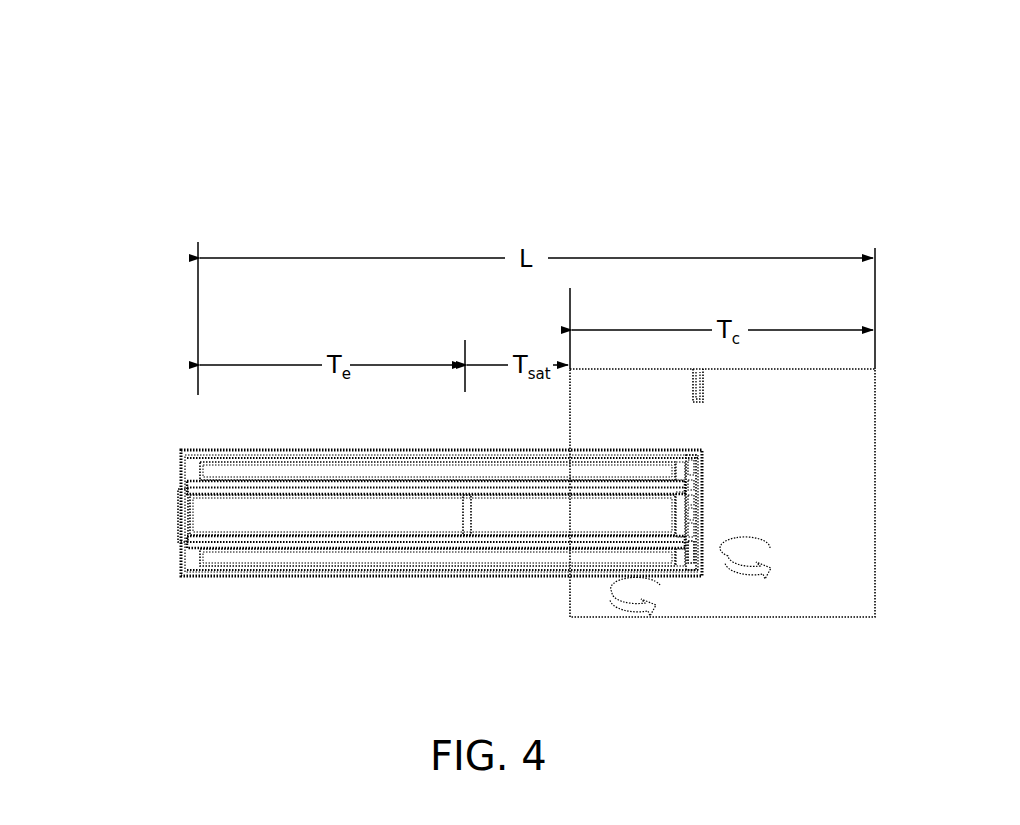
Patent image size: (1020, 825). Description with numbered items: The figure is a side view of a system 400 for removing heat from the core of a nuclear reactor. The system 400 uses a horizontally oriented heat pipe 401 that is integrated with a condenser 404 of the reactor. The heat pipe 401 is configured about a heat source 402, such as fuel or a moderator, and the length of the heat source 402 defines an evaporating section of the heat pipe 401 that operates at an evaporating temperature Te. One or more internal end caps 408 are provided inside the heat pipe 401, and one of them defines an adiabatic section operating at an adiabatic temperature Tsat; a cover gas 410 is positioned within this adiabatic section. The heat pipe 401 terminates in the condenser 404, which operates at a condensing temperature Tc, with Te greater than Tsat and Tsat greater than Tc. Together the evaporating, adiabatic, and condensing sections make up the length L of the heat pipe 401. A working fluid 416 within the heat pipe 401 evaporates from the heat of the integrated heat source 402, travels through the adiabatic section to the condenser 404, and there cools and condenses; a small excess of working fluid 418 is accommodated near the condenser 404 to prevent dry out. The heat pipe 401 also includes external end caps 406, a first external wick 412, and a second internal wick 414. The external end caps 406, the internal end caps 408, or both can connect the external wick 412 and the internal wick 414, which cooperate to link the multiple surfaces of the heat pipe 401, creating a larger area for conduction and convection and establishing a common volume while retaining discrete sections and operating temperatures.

The system 400 is at (583, 116).
The heat pipe 401 is at (185, 597).
The heat source 402 is at (322, 518).
The condenser 404 is at (819, 584).
The external end caps 406 is at (178, 470).
The internal end caps 408 is at (196, 514).
The cover gas 410 is at (566, 507).
The external wick 412 is at (342, 457).
The internal wick 414 is at (390, 454).
The working fluid 416 is at (253, 474).
The excess of working fluid 418 is at (688, 557).